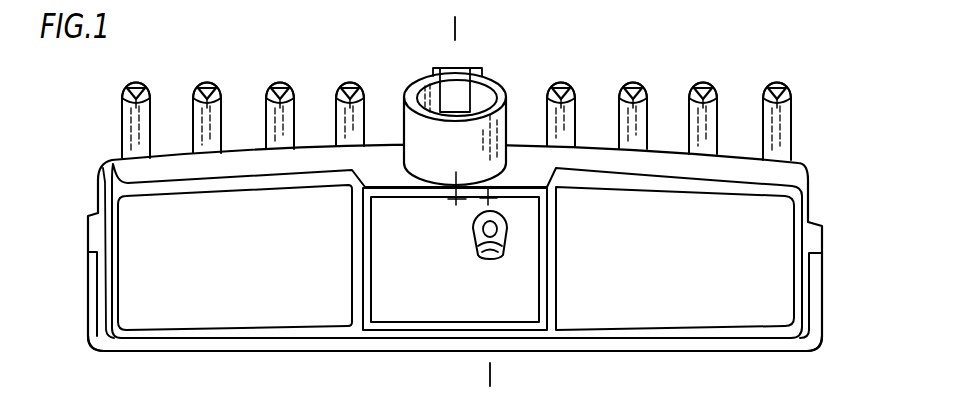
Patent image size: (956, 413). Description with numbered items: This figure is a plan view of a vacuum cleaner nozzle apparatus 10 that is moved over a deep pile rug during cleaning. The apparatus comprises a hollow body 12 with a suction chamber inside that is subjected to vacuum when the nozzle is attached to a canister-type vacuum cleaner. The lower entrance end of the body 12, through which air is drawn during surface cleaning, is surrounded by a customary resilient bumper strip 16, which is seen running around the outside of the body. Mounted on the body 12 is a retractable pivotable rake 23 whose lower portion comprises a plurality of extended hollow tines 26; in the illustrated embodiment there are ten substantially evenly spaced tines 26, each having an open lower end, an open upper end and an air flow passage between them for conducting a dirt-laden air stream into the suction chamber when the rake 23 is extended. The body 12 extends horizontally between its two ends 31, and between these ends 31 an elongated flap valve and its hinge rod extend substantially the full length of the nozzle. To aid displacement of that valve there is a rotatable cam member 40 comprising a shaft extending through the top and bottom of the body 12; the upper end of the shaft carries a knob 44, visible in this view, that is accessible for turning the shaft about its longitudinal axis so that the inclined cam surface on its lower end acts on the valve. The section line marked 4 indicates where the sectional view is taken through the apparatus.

The section line 4- 4 is at (455, 26).
The vacuum cleaner nozzle apparatus 10 is at (458, 246).
The hollow body 12 is at (630, 253).
The resilient bumper strip 16 is at (823, 301).
The retractable pivotable rake 23 is at (577, 98).
The hollow tines 26 is at (755, 102).
The ends of the nozzle body 31 is at (98, 229).
The rotatable cam member 40 is at (466, 261).
The knob 44 is at (474, 250).